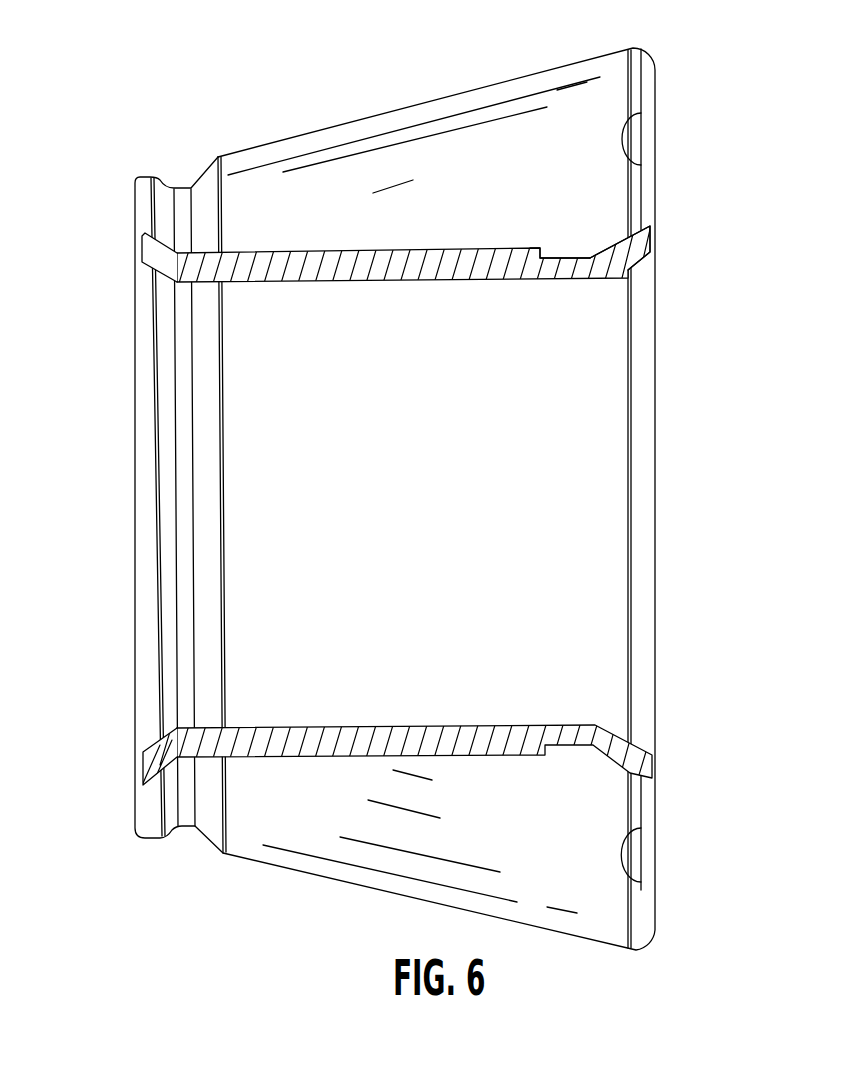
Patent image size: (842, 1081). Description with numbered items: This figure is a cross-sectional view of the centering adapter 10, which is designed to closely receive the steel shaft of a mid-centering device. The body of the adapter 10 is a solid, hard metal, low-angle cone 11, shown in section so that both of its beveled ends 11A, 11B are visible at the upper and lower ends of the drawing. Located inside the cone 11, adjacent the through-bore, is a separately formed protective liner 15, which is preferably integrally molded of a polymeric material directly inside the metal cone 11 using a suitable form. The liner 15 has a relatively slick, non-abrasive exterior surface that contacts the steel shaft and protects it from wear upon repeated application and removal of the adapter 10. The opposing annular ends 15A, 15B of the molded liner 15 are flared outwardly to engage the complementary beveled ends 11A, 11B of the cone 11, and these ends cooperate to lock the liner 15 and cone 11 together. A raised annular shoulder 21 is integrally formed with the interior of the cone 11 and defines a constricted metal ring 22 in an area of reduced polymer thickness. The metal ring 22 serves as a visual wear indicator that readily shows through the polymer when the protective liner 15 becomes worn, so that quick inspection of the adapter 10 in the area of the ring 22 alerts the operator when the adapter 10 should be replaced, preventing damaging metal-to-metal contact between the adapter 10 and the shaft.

The centering adapter 10 is at (399, 475).
The cone 11 is at (388, 133).
The beveled end of the cone 11A is at (637, 218).
The beveled end of the cone 11B is at (163, 232).
The protective liner 15 is at (257, 725).
The annular end of the liner 15A is at (638, 270).
The annular end of the liner 15B is at (158, 278).
The raised annular shoulder 21 is at (523, 255).
The metal ring 22 is at (558, 277).